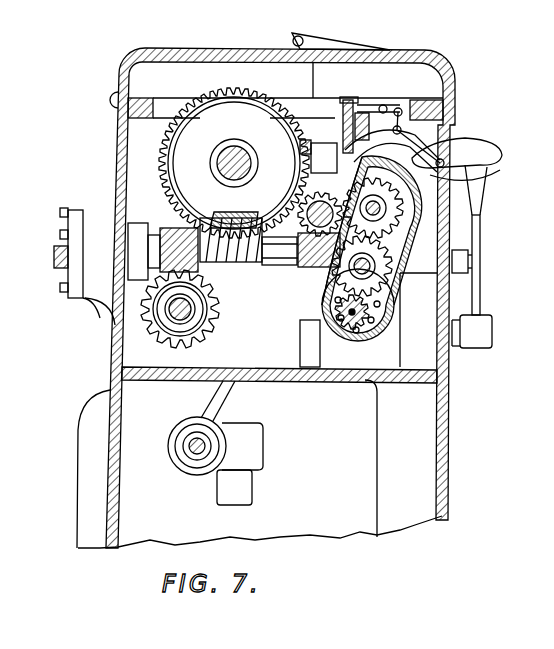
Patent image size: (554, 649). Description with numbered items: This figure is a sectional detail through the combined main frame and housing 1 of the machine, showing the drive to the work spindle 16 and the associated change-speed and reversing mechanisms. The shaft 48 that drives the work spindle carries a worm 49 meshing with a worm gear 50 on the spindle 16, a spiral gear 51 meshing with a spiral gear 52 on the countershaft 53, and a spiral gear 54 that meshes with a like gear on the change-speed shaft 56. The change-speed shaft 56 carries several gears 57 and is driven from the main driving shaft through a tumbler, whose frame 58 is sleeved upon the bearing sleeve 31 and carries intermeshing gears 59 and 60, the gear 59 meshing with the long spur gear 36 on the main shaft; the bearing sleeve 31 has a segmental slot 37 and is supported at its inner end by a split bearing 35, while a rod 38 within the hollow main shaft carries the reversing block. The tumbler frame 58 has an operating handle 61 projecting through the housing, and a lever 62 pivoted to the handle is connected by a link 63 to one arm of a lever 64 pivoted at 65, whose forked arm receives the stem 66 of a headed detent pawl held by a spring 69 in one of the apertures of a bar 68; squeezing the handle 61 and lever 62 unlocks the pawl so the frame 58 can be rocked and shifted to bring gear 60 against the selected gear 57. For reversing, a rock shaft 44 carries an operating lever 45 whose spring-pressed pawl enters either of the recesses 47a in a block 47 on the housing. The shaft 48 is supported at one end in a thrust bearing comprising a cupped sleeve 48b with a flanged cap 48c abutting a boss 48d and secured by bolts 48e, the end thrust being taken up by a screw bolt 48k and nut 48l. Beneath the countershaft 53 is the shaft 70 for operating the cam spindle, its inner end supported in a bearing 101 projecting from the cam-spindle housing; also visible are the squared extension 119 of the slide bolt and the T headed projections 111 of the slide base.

The main frame and housing 1 is at (112, 320).
The work spindle 16 is at (236, 152).
The worm gear 50 is at (234, 163).
The spiral gear 51 is at (163, 228).
The worm 49 is at (266, 266).
The spiral gear 54 is at (300, 250).
The shaft 48 is at (288, 266).
The gears 57 is at (300, 238).
The spiral gear 52 is at (173, 315).
The countershaft 53 is at (190, 312).
The change-speed shaft 56 is at (373, 208).
The gear 59 is at (393, 282).
The rod 38 is at (370, 312).
The spur gear 36 is at (388, 325).
The bearing sleeve 31 is at (390, 336).
The segmental slot 37 is at (323, 302).
The split bearing 35 is at (318, 322).
The rock shaft 44 is at (304, 345).
The gear 60 is at (392, 196).
The operating handle 61 is at (472, 148).
The lever 62 is at (498, 168).
The tumbler frame 58 is at (415, 228).
The operating lever 45 is at (481, 292).
The block 47 is at (460, 260).
The recesses 47a is at (469, 262).
The squared extension 119 is at (552, 224).
The T headed projections 111 is at (552, 262).
The bar 68 is at (324, 150).
The spring 69 is at (342, 128).
The stem 66 is at (357, 112).
The lever 64 is at (372, 120).
The pivot 65 is at (387, 108).
The link 63 is at (402, 126).
The boss 48d is at (98, 212).
The flanged cap 48c is at (60, 212).
The nut 48l is at (60, 235).
The screw bolt 48k is at (54, 257).
The cupped sleeve 48b is at (60, 288).
The bolts 48e is at (84, 302).
The shaft 70 is at (192, 452).
The bearing 101 is at (258, 406).